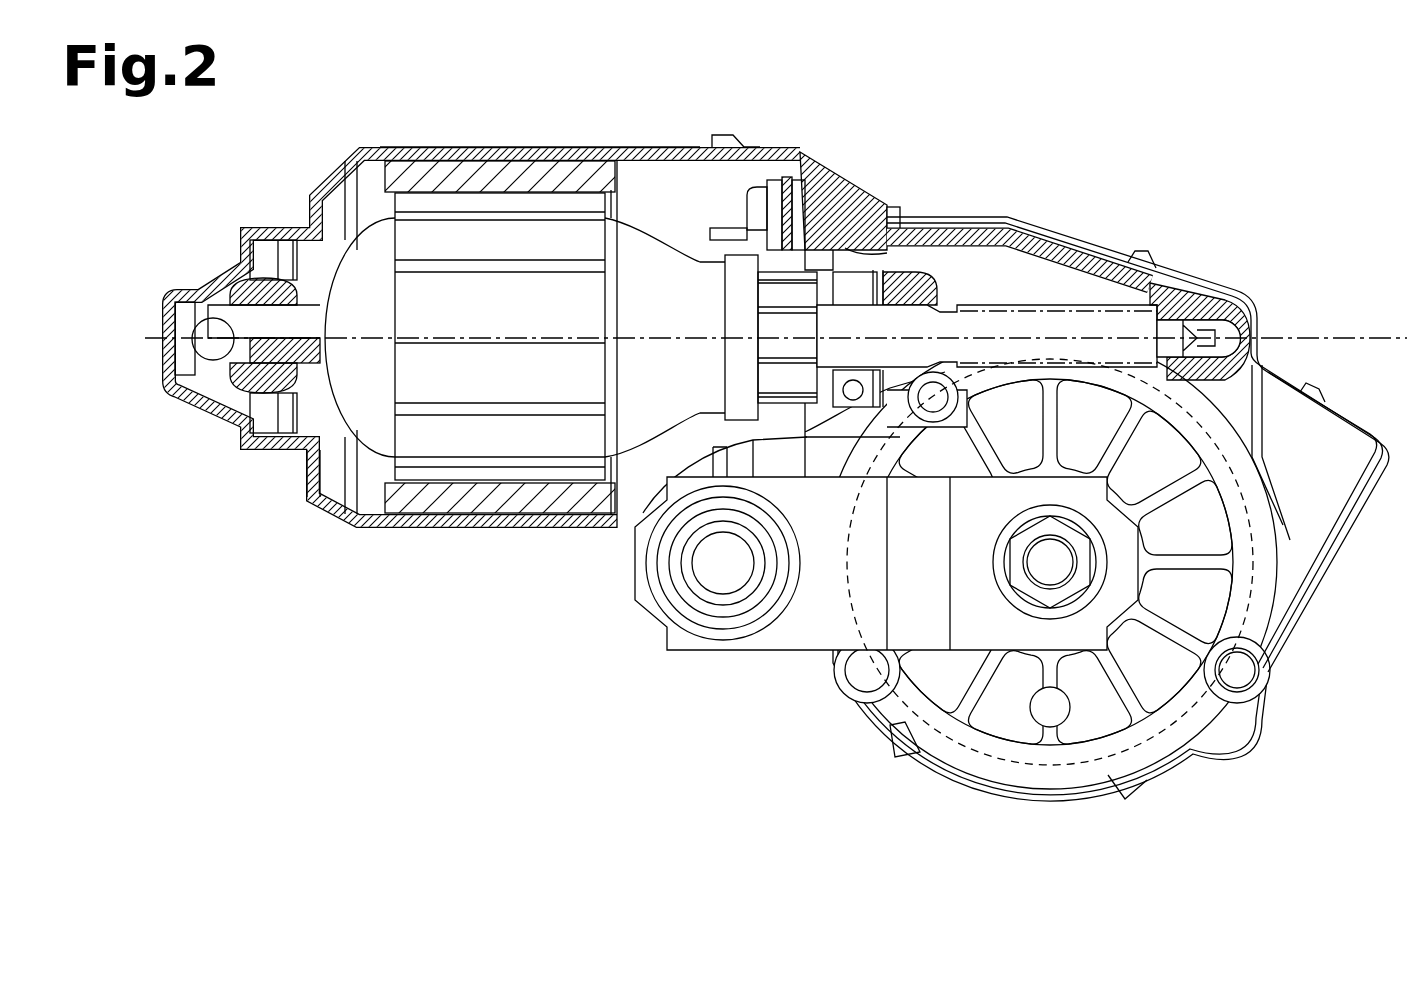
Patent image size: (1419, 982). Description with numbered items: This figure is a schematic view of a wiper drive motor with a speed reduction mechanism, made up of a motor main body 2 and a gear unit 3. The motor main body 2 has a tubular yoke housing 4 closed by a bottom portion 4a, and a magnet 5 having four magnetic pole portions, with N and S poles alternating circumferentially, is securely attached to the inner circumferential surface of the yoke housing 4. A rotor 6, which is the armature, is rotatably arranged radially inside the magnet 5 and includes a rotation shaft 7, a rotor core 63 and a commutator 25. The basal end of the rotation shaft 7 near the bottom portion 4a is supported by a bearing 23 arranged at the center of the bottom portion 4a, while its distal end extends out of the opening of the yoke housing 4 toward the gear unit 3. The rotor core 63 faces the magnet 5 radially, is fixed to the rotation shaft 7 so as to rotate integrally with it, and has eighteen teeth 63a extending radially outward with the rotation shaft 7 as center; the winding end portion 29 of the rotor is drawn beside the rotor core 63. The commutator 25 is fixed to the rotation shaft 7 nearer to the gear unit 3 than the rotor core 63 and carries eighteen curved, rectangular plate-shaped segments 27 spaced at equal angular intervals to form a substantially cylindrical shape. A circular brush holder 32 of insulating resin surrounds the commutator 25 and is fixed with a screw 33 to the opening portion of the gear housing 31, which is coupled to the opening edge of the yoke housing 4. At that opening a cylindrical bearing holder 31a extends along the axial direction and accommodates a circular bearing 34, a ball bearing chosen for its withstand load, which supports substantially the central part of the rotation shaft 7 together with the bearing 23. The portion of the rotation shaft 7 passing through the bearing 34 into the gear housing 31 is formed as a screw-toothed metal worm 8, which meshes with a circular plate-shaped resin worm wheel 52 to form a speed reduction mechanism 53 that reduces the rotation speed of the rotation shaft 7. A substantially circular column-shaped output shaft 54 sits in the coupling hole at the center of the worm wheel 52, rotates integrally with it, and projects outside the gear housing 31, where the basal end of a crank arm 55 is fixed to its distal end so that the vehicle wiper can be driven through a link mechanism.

The motor main body 2 is at (465, 141).
The gear unit 3 is at (1047, 223).
The yoke housing 4 is at (506, 530).
The bottom portion 4a is at (308, 465).
The magnet 5 is at (544, 166).
The rotor 6 is at (346, 195).
The rotation shaft 7 is at (228, 318).
The worm 8 is at (1043, 305).
The bearing 23 is at (270, 295).
The commutator 25 is at (742, 325).
The segment 27 is at (768, 380).
The armature 29 is at (350, 430).
The gear housing 31 is at (852, 190).
The bearing holder 31a is at (875, 253).
The brush holder 32 is at (785, 177).
The screw 33 is at (745, 215).
The bearing 34 is at (852, 401).
The worm wheel 52 is at (1047, 775).
The speed reduction mechanism 53 is at (1107, 300).
The output shaft 54 is at (1042, 556).
The crank arm 55 is at (797, 650).
The rotor core 63 is at (385, 292).
The teeth 63a is at (607, 297).